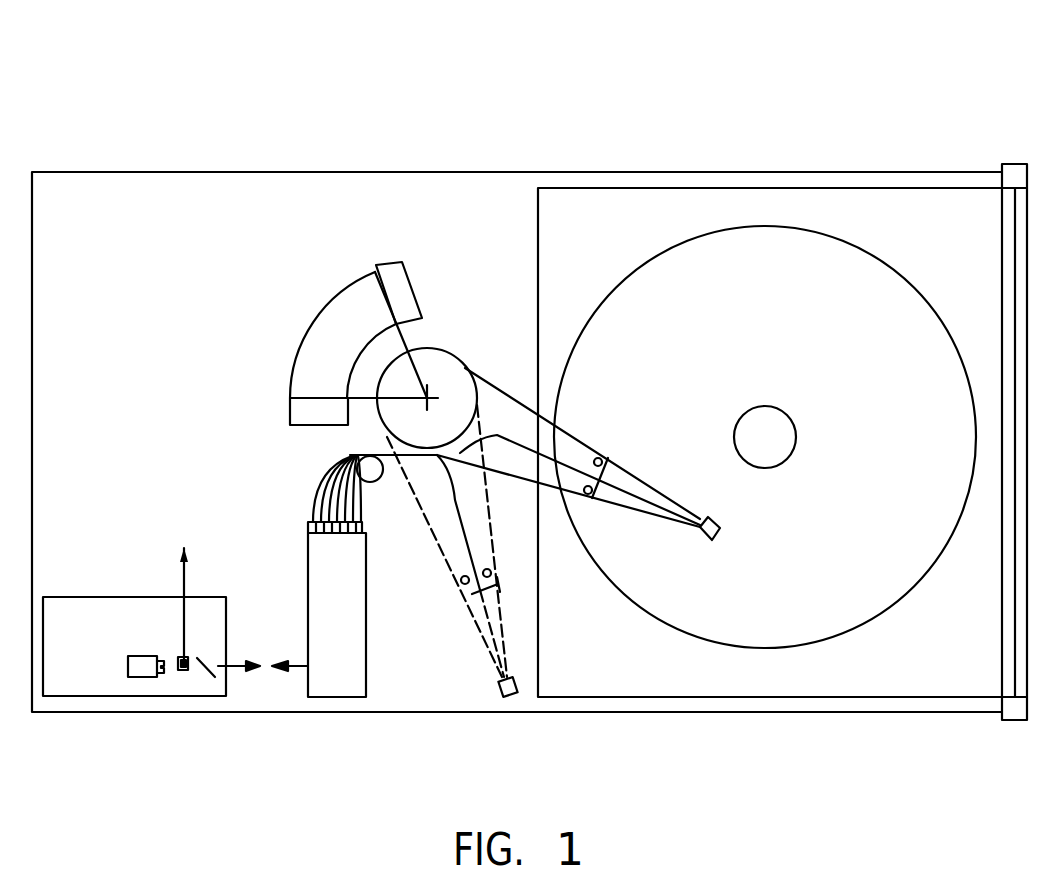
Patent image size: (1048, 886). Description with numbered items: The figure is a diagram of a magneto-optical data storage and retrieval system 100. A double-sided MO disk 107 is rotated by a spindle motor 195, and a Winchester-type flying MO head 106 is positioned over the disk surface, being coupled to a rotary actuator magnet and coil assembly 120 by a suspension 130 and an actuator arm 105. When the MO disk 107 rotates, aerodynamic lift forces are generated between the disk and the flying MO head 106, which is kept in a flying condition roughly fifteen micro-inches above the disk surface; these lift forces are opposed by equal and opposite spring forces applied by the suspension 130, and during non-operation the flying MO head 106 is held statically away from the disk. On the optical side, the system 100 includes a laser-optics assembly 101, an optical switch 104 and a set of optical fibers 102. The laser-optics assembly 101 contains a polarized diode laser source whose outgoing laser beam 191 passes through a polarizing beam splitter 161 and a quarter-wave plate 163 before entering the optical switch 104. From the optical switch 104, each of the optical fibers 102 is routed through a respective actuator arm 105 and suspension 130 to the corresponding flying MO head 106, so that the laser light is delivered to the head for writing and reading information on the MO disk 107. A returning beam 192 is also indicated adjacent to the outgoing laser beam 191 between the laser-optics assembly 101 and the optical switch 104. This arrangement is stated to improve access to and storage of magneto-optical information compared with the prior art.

The magneto-optical data storage and retrieval system 100 is at (692, 140).
The laser-optics assembly 101 is at (98, 678).
The optical fibers 102 is at (320, 483).
The optical switch 104 is at (373, 582).
The actuator arm 105 is at (587, 445).
The flying MO head 106 is at (722, 543).
The MO disk 107 is at (830, 237).
The rotary actuator magnet and coil assembly 120 is at (377, 277).
The suspension 130 is at (647, 477).
The polarizing beam splitter 161 is at (181, 673).
The quarter-wave plate 163 is at (203, 678).
The outgoing laser beam 191 is at (240, 676).
The returning laser beam 192 is at (315, 765).
The spindle motor 195 is at (796, 415).